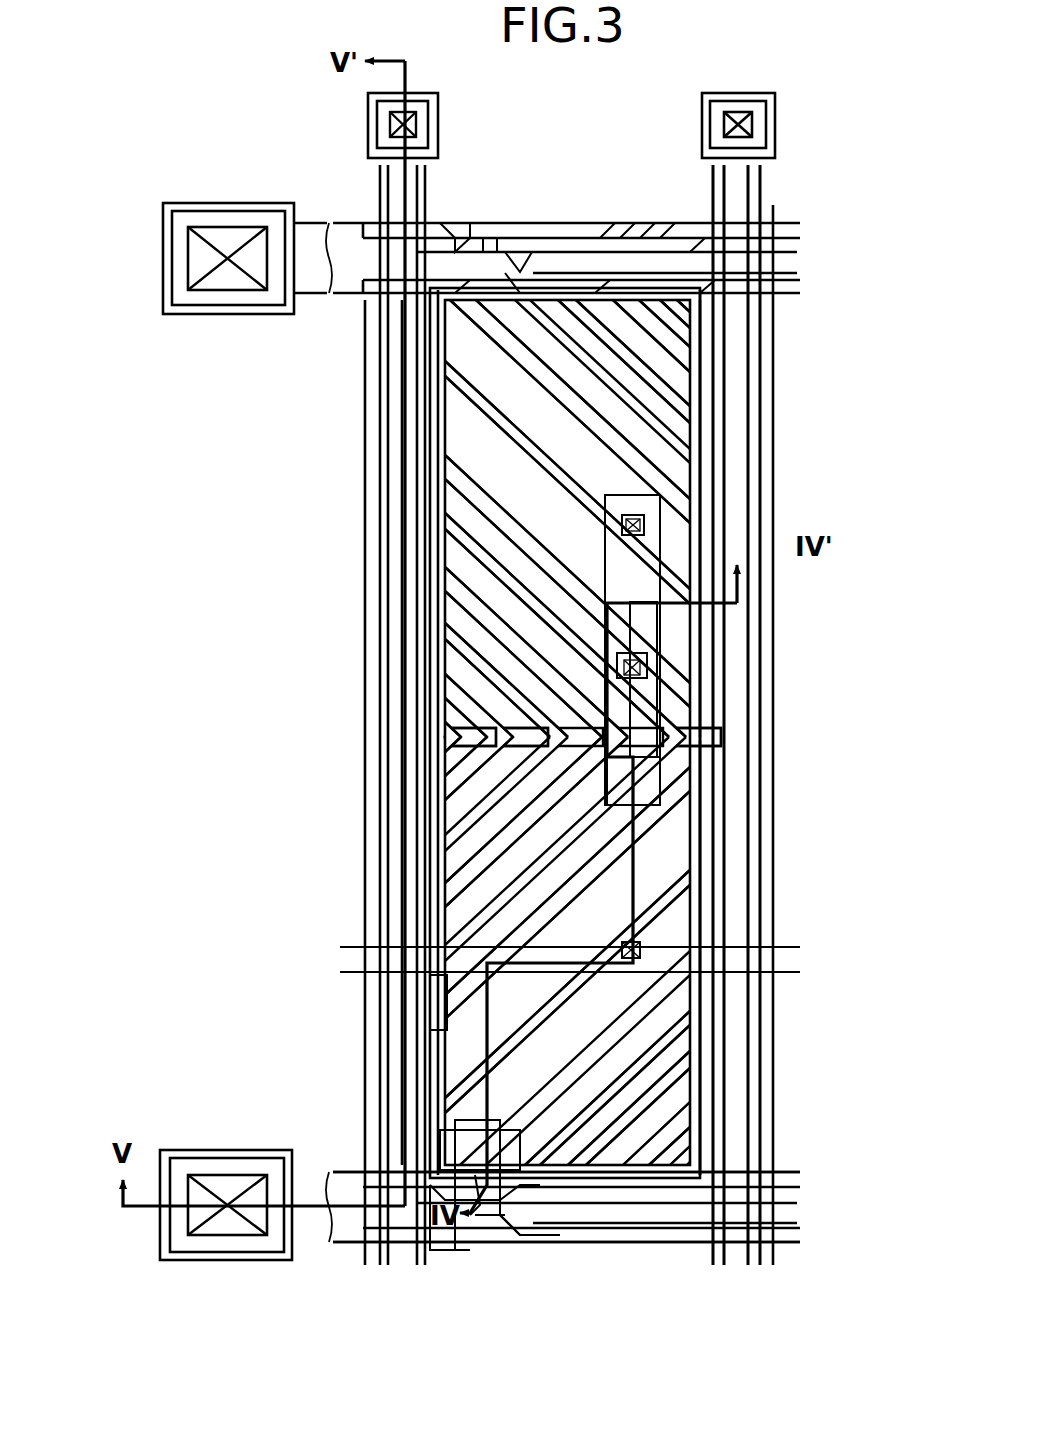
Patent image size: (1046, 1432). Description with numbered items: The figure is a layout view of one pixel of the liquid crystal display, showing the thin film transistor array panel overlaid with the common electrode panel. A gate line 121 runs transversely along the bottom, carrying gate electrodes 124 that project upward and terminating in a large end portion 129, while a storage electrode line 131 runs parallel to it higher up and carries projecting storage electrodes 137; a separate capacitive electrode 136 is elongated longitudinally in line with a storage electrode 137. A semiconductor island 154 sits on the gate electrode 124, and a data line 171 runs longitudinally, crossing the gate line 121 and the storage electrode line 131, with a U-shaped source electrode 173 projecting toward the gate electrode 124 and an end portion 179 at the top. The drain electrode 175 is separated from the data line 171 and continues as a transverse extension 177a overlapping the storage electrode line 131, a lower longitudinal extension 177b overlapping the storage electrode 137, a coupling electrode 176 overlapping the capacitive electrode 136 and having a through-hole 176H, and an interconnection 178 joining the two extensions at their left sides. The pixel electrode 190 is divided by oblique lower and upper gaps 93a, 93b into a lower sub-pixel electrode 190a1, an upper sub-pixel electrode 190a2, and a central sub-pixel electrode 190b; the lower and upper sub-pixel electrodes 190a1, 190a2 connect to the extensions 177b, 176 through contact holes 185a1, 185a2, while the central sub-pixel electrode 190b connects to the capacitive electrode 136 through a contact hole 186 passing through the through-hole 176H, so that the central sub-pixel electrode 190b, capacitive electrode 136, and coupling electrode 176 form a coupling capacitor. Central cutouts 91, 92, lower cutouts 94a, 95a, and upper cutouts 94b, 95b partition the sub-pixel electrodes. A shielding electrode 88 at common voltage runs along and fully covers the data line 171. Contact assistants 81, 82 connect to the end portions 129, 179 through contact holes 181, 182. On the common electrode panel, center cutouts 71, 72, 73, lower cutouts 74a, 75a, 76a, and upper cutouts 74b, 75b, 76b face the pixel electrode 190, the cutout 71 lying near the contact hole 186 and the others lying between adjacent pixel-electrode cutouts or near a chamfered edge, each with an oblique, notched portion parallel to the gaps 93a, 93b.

The contact assistant 82 is at (438, 102).
The end portion of data line 179 is at (428, 142).
The contact hole 182 is at (390, 122).
The upper cutout of common electrode 76b is at (708, 322).
The upper cutout of pixel electrode 94b is at (490, 344).
The upper cutout of pixel electrode 95b is at (680, 350).
The upper cutout of common electrode 74b is at (487, 407).
The upper cutout of common electrode 75b is at (680, 406).
The upper gap 93b is at (470, 470).
The data line 171 is at (735, 445).
The central sub-pixel electrode 190b is at (470, 494).
The upper sub-pixel electrode 190a2 is at (728, 492).
The contact hole 185a2 is at (644, 524).
The center cutout of common electrode 73 is at (490, 545).
The capacitive electrode 136 is at (700, 600).
The central cutout of pixel electrode 92 is at (470, 610).
The coupling electrode 176 is at (680, 640).
The through-hole 176H is at (647, 665).
The center cutout of common electrode 72 is at (460, 655).
The contact hole 186 is at (642, 690).
The center cutout of common electrode 71 is at (430, 690).
The pixel electrode 190 is at (130, 668).
The shielding electrode 88 is at (720, 736).
The interconnection 178 is at (740, 760).
The storage electrode 137 is at (680, 800).
The central cutout of pixel electrode 91 is at (460, 800).
The lower longitudinal extension 177b is at (710, 822).
The lower gap 93a is at (680, 855).
The storage electrode line 131 is at (355, 945).
The contact hole 185a1 is at (640, 945).
The transverse extension 177a is at (440, 990).
The lower cutout of pixel electrode 94a is at (680, 1010).
The lower cutout of common electrode 74a is at (470, 1070).
The lower sub-pixel electrode 190a1 is at (715, 1060).
The lower cutout of common electrode 76a is at (700, 1083).
The drain electrode 175 is at (470, 1128).
The gate electrode 124 is at (440, 1134).
The lower cutout of common electrode 75a is at (605, 1120).
The lower cutout of pixel electrode 95a is at (650, 1145).
The contact assistant 81 is at (248, 1150).
The end portion of gate line 129 is at (165, 1239).
The contact hole 181 is at (188, 1212).
The semiconductor island 154 is at (445, 1250).
The source electrode 173 is at (515, 1245).
The gate line 121 is at (598, 1200).